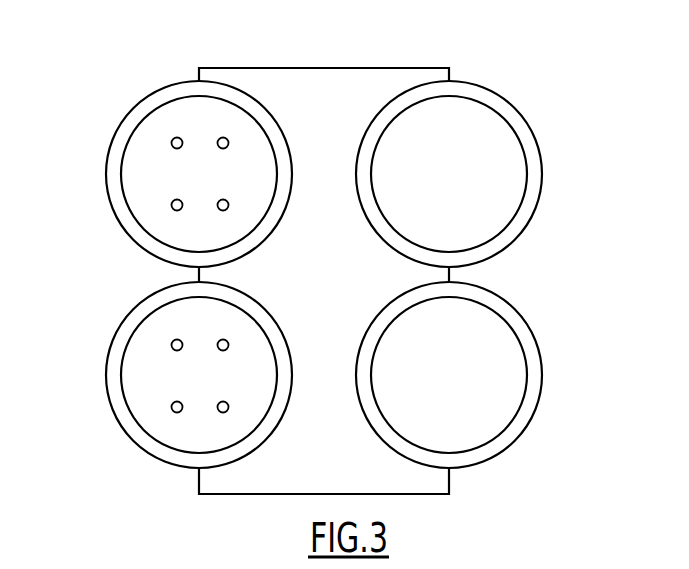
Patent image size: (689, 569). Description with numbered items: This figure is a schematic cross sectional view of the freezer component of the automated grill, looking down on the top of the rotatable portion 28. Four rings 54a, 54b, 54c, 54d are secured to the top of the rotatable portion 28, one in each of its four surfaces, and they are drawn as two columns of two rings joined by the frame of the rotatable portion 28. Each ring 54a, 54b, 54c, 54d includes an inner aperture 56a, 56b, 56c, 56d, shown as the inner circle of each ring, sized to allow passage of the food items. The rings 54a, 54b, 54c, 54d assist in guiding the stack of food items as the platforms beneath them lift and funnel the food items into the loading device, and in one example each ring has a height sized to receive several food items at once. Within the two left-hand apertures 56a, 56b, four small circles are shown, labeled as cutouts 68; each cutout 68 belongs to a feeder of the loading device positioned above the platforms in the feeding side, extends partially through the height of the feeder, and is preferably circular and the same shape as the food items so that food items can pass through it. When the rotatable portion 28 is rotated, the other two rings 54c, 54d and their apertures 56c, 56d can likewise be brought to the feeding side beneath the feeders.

The rotatable portion 28 is at (362, 88).
The ring 54a is at (118, 125).
The inner aperture 56a is at (122, 188).
The ring 54b is at (118, 326).
The inner aperture 56b is at (122, 389).
The ring 54c is at (540, 150).
The inner aperture 56c is at (513, 127).
The ring 54d is at (540, 352).
The inner aperture 56d is at (513, 329).
The cutout 68 is at (172, 206).